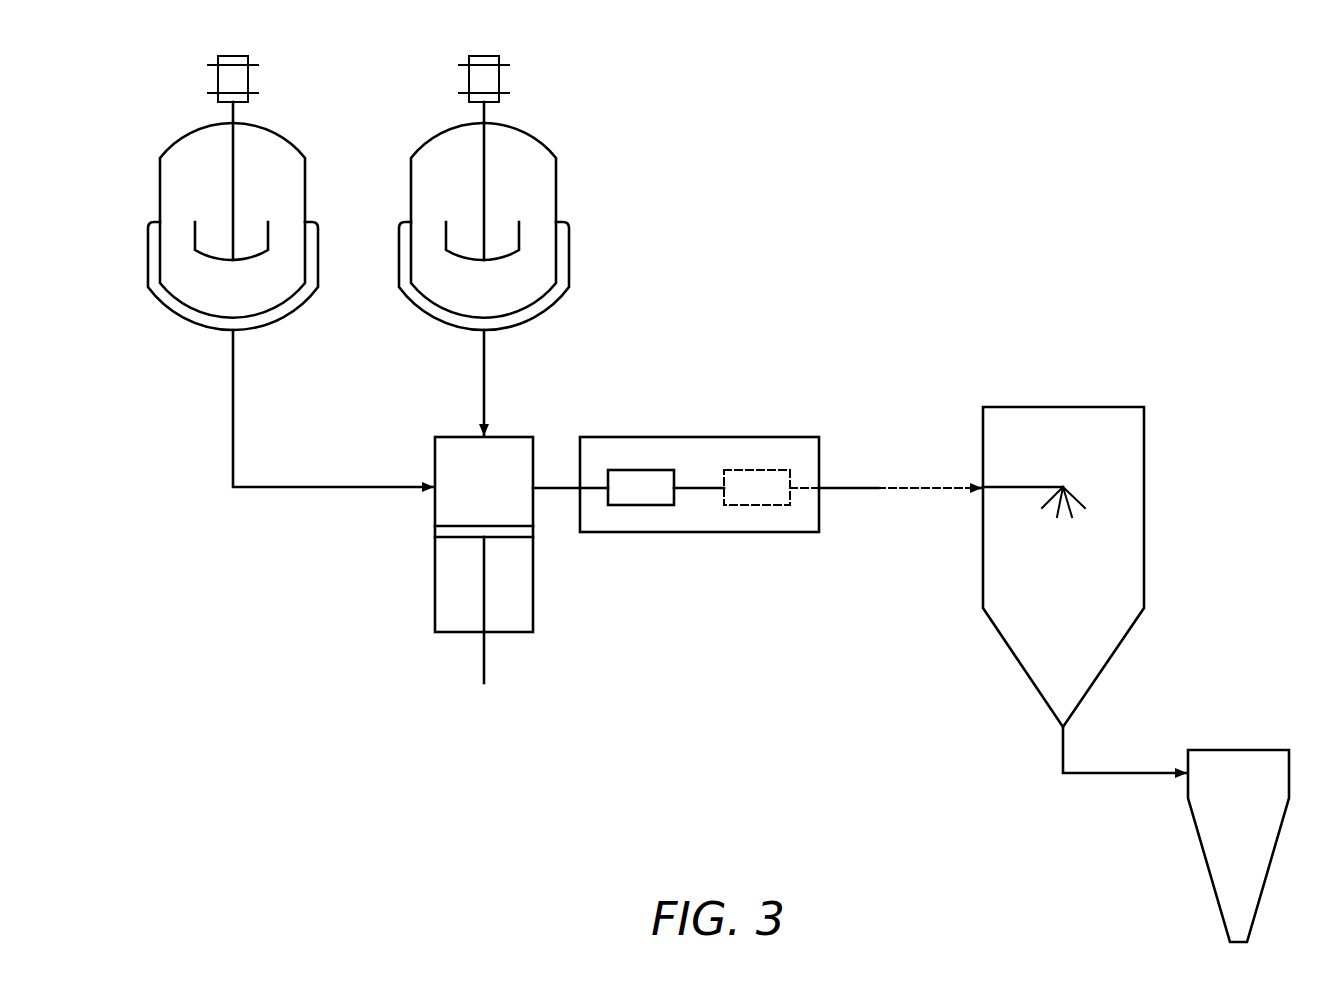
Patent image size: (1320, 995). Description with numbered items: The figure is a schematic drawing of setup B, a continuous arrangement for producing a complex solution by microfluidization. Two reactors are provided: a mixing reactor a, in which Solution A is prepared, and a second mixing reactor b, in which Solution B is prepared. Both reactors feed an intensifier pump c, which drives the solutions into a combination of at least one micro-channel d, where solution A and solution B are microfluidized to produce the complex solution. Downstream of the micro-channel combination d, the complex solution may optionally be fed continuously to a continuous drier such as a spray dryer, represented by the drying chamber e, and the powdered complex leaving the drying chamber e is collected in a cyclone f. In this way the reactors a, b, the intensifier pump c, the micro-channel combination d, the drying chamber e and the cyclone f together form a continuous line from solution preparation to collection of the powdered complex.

The mixing reactor a is at (290, 271).
The second mixing reactor b is at (484, 245).
The intensifier pump c is at (492, 560).
The combination of at least one micro-channel d is at (780, 502).
The drying chamber e is at (1084, 590).
The cyclone f is at (1238, 846).